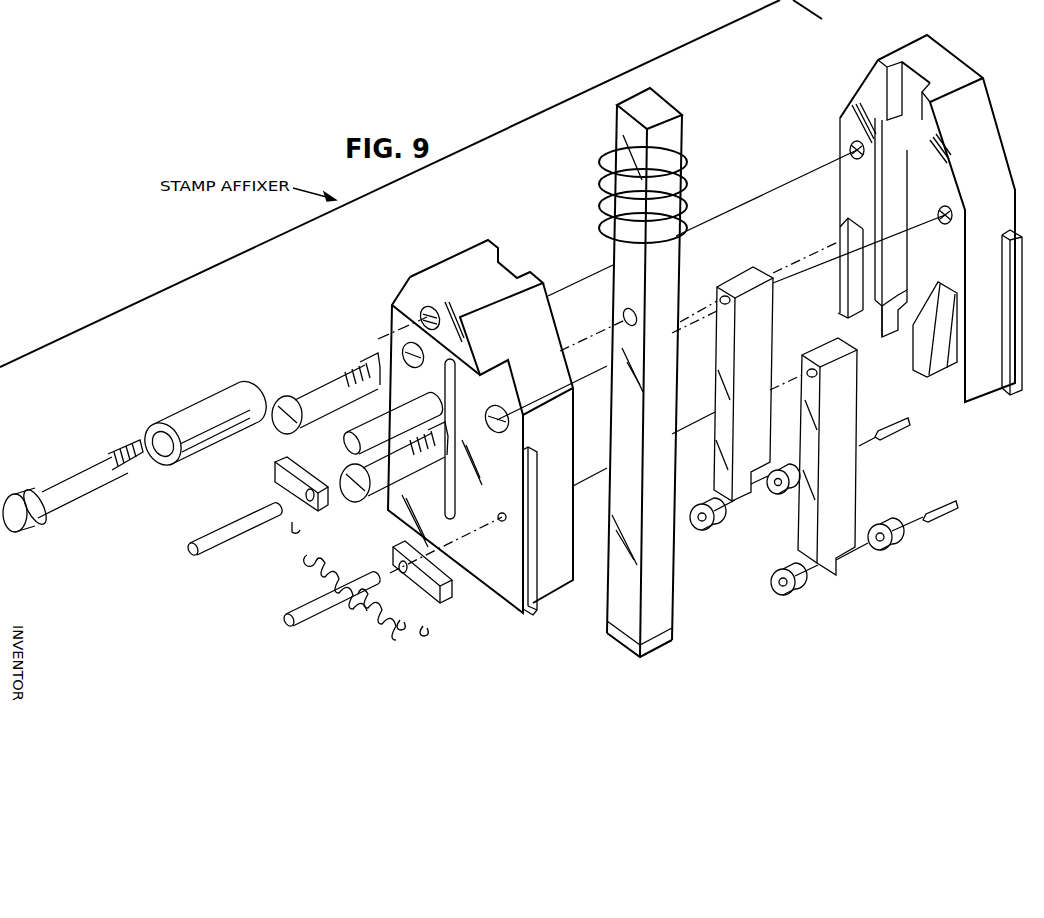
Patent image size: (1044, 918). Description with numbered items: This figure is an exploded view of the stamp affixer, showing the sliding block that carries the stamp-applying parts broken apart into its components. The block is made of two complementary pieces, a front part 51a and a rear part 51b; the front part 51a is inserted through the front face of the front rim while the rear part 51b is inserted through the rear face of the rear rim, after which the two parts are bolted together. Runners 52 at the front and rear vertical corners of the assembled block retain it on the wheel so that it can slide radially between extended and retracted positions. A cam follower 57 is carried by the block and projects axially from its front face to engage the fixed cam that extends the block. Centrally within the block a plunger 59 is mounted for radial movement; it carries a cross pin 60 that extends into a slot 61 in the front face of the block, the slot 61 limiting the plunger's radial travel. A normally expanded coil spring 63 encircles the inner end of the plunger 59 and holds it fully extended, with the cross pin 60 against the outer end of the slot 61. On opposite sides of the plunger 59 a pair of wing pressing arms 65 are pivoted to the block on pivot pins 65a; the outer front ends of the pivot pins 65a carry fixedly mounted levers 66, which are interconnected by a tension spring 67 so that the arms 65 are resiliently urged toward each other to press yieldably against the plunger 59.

The front part 51a is at (405, 287).
The rear part 51b is at (870, 90).
The runners 52 is at (1012, 292).
The cam follower 57 is at (236, 404).
The plunger 59 is at (682, 128).
The cross pin 60 is at (348, 450).
The slot 61 is at (458, 478).
The coil spring 63 is at (600, 166).
The wing pressing arms 65 is at (838, 466).
The pivot pins 65a is at (185, 542).
The levers 66 is at (278, 482).
The tension spring 67 is at (316, 577).